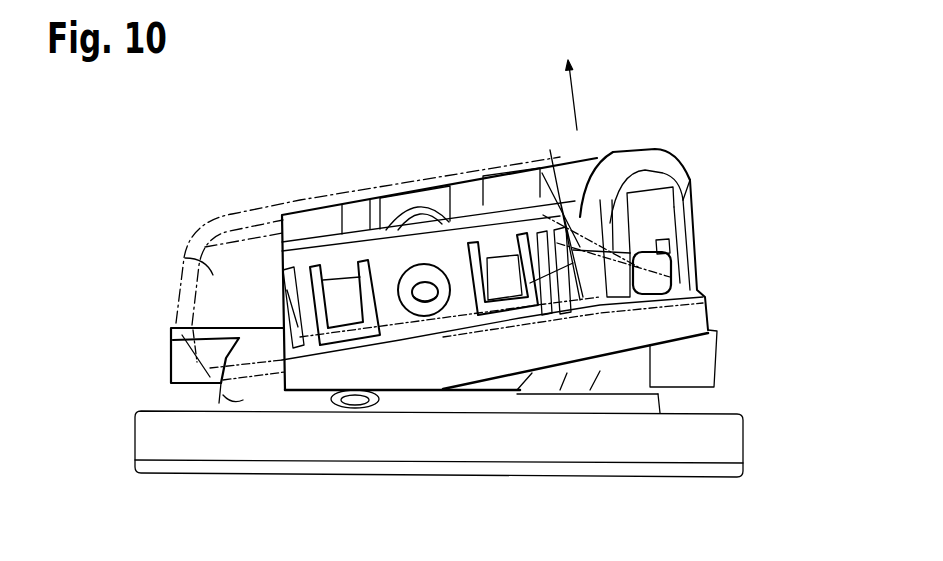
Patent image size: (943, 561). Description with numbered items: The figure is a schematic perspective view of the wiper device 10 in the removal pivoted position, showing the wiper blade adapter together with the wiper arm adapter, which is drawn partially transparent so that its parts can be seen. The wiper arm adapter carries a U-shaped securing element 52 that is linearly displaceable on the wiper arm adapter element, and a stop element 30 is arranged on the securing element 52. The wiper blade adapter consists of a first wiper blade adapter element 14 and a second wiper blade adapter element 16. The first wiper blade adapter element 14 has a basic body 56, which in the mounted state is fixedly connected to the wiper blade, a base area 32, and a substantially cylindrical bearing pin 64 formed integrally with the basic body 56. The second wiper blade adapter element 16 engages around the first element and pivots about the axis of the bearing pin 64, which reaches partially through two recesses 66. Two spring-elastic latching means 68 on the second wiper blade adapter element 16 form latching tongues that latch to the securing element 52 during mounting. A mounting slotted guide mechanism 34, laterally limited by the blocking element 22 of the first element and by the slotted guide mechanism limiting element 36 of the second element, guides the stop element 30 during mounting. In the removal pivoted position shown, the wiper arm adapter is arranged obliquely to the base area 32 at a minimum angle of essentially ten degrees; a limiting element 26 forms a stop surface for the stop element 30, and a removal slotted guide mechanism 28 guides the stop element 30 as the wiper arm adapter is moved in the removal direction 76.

The wiper device 10 is at (138, 167).
The first wiper blade adapter element 14 is at (742, 398).
The second wiper blade adapter element 16 is at (706, 226).
The blocking element 22 is at (568, 373).
The limiting element 26 is at (582, 203).
The removal slotted guide mechanism 28 is at (647, 189).
The stop element 30 is at (676, 280).
The base area 32 is at (217, 402).
The mounting slotted guide mechanism 34 is at (673, 197).
The slotted guide mechanism limiting element 36 is at (655, 196).
The securing element 52 is at (185, 258).
The basic body 56 is at (666, 452).
The bearing pin 64 is at (430, 313).
The recesses 66 is at (412, 330).
The latching means 68 is at (337, 310).
The removal direction 76 is at (578, 108).